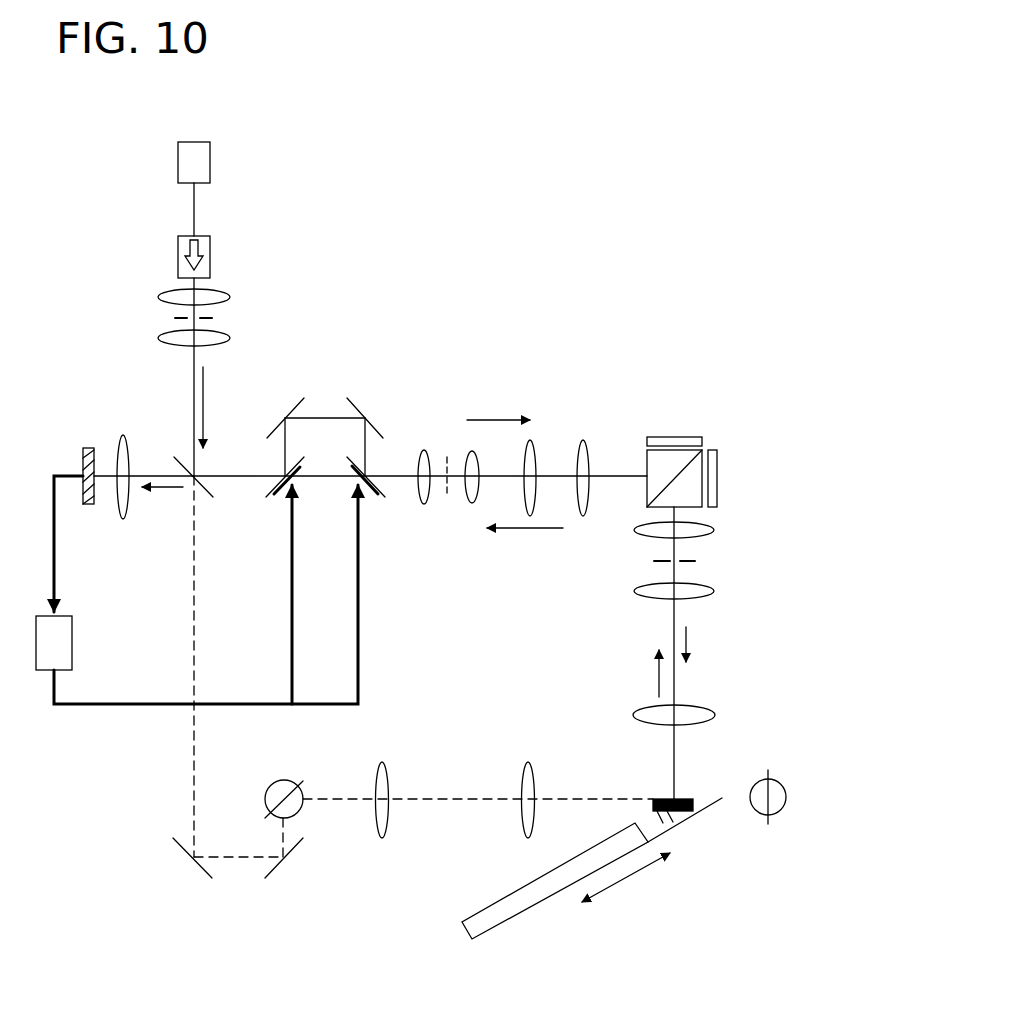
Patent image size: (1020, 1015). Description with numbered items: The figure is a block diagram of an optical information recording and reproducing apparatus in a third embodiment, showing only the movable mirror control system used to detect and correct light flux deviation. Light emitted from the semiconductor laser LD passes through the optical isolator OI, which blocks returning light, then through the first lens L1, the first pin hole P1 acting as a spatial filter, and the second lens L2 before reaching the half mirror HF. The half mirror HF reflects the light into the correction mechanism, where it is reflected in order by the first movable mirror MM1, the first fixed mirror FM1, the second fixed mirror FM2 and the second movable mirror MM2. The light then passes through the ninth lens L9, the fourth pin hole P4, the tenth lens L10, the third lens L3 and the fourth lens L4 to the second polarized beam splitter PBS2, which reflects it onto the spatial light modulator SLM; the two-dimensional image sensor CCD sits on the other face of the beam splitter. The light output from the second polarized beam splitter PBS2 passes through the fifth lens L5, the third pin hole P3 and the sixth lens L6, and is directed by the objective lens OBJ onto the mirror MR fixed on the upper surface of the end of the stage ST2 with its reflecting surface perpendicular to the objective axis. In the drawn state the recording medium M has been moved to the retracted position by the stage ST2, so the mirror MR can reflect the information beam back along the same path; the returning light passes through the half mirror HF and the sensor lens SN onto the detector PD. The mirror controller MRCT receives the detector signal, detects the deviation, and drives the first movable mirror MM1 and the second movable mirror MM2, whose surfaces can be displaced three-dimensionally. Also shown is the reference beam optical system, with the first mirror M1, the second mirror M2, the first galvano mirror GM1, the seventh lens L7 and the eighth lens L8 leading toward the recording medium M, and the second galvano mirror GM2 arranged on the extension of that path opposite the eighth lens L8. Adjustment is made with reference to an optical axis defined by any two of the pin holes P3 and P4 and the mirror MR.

The semiconductor laser LD is at (210, 164).
The optical isolator OI is at (210, 246).
The first lens L1 is at (230, 297).
The first pin hole P1 is at (176, 320).
The second lens L2 is at (230, 338).
The detector PD is at (83, 448).
The sensor lens SN is at (123, 435).
The half mirror HF is at (176, 456).
The first fixed mirror FM1 is at (272, 430).
The second fixed mirror FM2 is at (375, 422).
The first movable mirror MM1 is at (275, 503).
The second movable mirror MM2 is at (352, 502).
The ninth lens L9 is at (424, 450).
The fourth pin hole P4 is at (447, 500).
The tenth lens L10 is at (472, 504).
The third lens L3 is at (535, 440).
The fourth lens L4 is at (585, 444).
The second polarized beam splitter PBS2 is at (647, 478).
The spatial light modulator SLM is at (674, 437).
The two-dimensional image sensor CCD is at (717, 480).
The fifth lens L5 is at (714, 530).
The third pin hole P3 is at (695, 561).
The sixth lens L6 is at (714, 591).
The objective lens OBJ is at (715, 714).
The mirror controller MRCT is at (72, 648).
The first galvano mirror GM1 is at (281, 781).
The first mirror M1 is at (182, 854).
The second mirror M2 is at (293, 854).
The seventh lens L7 is at (382, 762).
The eighth lens L8 is at (528, 762).
The mirror MR is at (653, 799).
The stage ST2 is at (718, 810).
The recording medium M is at (520, 890).
The second galvano mirror GM2 is at (786, 797).